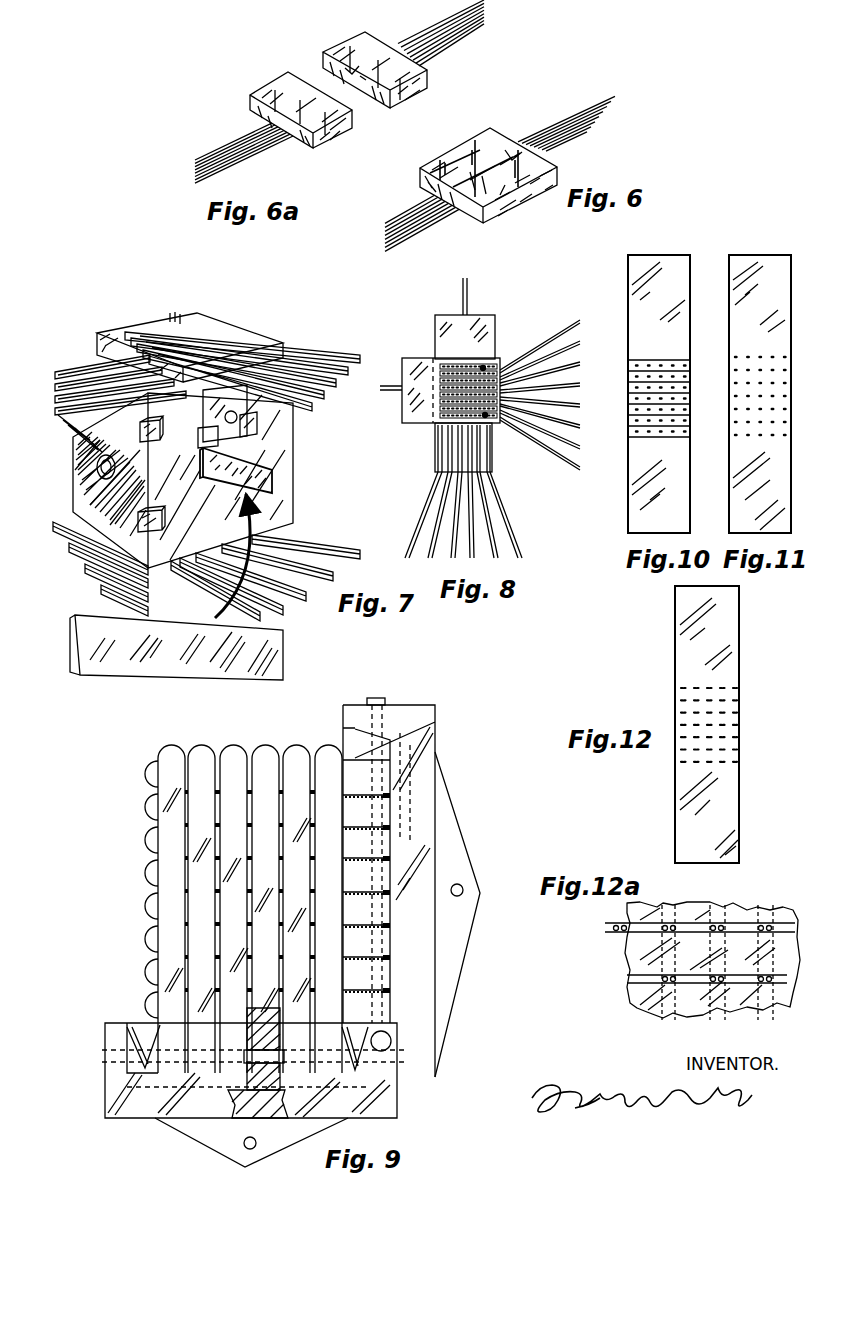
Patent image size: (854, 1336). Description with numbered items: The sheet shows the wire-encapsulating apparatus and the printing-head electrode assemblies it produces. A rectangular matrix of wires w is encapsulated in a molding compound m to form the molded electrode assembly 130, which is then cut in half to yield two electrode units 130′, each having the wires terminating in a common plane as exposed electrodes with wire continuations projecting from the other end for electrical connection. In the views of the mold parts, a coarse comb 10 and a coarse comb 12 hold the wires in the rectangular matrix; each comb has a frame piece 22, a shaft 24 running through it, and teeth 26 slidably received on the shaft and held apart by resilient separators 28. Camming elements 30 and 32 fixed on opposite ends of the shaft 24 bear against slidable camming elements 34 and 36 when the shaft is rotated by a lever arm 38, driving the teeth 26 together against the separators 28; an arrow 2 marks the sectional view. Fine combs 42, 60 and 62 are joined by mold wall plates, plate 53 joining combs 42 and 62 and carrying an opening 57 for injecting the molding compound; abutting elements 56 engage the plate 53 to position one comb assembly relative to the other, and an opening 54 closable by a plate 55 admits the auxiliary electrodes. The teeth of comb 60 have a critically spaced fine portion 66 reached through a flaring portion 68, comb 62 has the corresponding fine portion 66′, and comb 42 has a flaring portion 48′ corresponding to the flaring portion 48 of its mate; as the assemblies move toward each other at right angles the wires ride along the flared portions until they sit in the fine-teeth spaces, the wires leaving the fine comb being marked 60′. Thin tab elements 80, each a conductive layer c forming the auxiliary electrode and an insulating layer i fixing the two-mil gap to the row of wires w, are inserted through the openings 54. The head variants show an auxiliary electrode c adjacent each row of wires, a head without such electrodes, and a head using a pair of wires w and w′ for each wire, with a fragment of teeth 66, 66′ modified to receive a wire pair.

In FIG. 9, the section line direction arrow 2 is at (104, 879).
In FIG. 9, the coarse comb 10 is at (140, 773).
In FIG. 9, the coarse comb 12 is at (160, 749).
In FIG. 9, the frame piece 22 is at (406, 716).
In FIG. 9, the shaft 24 is at (382, 750).
In FIG. 9, the teeth 26 is at (362, 982).
In FIG. 9, the resilient separators 28 is at (392, 797).
In FIG. 9, the camming element 30 is at (355, 758).
In FIG. 9, the camming element 32 is at (128, 1072).
In FIG. 9, the camming element 34 is at (390, 762).
In FIG. 9, the camming element 36 is at (393, 1022).
In FIG. 9, the lever arm 38 is at (378, 697).
In FIG. 7, the fine comb 42 is at (177, 579).
In FIG. 7, the flaring portion 48 is at (128, 574).
In FIG. 7, the flaring portion 48′ is at (325, 555).
In FIG. 7, the wall plate 53 is at (55, 522).
In FIG. 7, the opening 54 is at (230, 447).
In FIG. 7, the plate 55 is at (215, 418).
In FIG. 7, the abutting elements 56 is at (162, 437).
In FIG. 7, the opening 57 is at (100, 478).
In FIG. 7, the fine comb 60 is at (70, 363).
In FIG. 8, the fine comb 60 is at (470, 316).
In FIG. 8, the fanned wires from module 60′ is at (552, 331).
In FIG. 7, the fine comb 62 is at (183, 311).
In FIG. 8, the fine comb 62 is at (410, 418).
In FIG. 7, the fine-teeth portion 66 is at (86, 357).
In FIG. 8, the fine-teeth portion 66 is at (495, 462).
In FIG. 12A, the fine-teeth portion 66 is at (630, 1002).
In FIG. 7, the fine-teeth portion 66′ is at (226, 328).
In FIG. 8, the fine-teeth portion 66′ is at (484, 367).
In FIG. 12A, the fine-teeth portion 66′ is at (637, 958).
In FIG. 7, the flaring portion 68 is at (80, 421).
In FIG. 8, the flaring portion 68 is at (510, 531).
In FIG. 7, the tab elements 80 is at (263, 487).
In FIG. 6, the molded electrode assembly 130 is at (462, 87).
In FIG. 6A, the electrode unit 130′ is at (300, 138).
In FIG. 6A, the molding compound m is at (273, 82).
In FIG. 6, the molding compound m is at (495, 138).
In FIG. 10, the molding compound m is at (632, 268).
In FIG. 11, the molding compound m is at (733, 273).
In FIG. 12, the molding compound m is at (682, 610).
In FIG. 6A, the wires w is at (227, 133).
In FIG. 6, the wires w is at (578, 141).
In FIG. 8, the wires w is at (493, 431).
In FIG. 10, the wires w is at (633, 360).
In FIG. 11, the wires w is at (772, 358).
In FIG. 12, the wires w is at (683, 683).
In FIG. 12A, the wires w is at (760, 925).
In FIG. 9, the wires w is at (312, 792).
In FIG. 12, the wire w′ is at (683, 690).
In FIG. 12A, the wire w′ is at (773, 925).
In FIG. 7, the auxiliary electrode c is at (262, 468).
In FIG. 10, the auxiliary electrode c is at (632, 366).
In FIG. 7, the insulating layer i is at (272, 483).